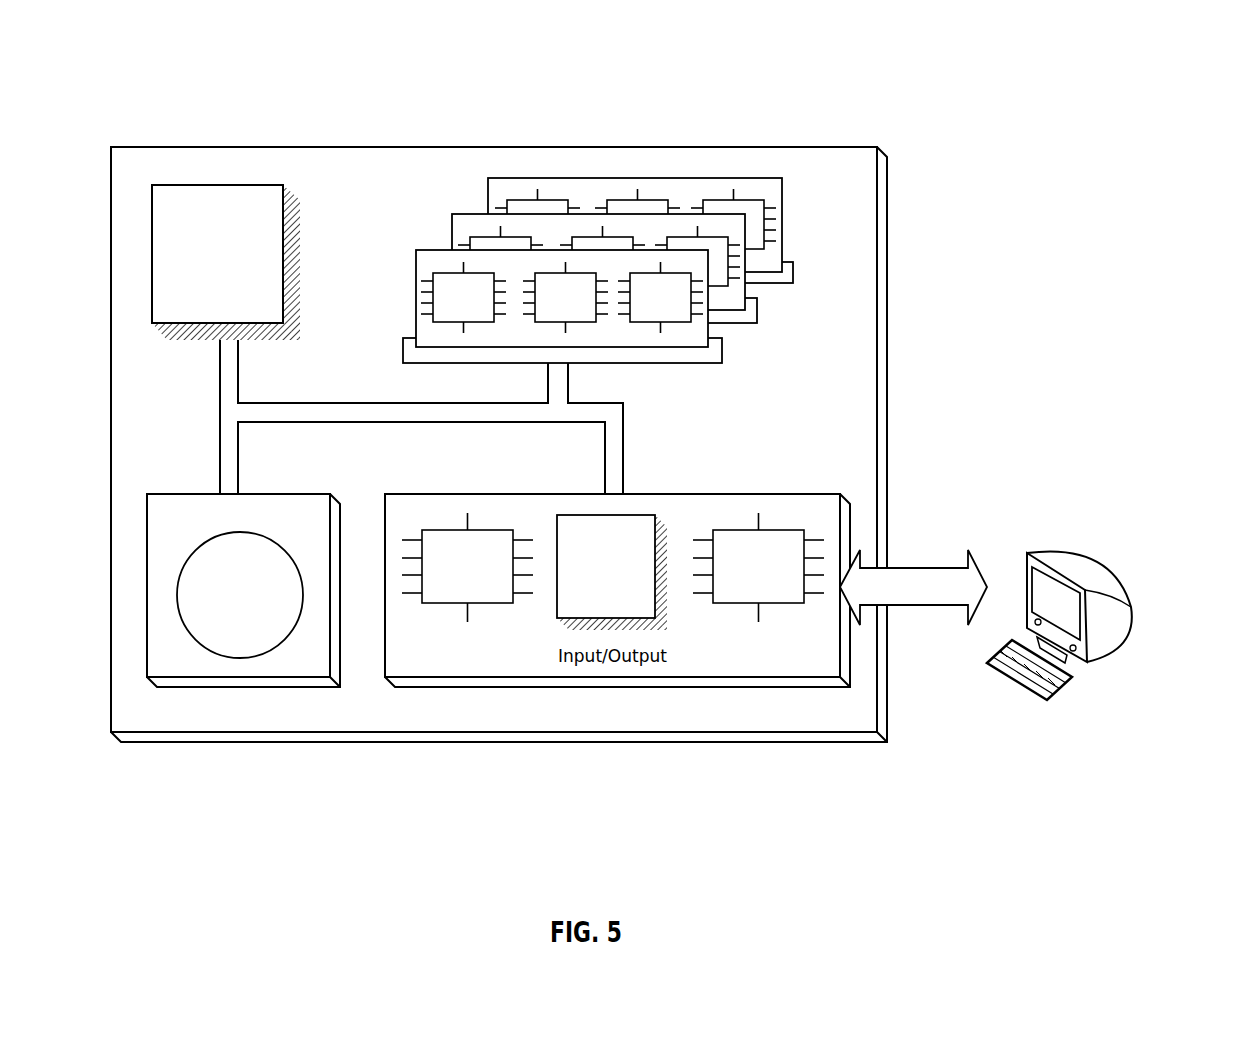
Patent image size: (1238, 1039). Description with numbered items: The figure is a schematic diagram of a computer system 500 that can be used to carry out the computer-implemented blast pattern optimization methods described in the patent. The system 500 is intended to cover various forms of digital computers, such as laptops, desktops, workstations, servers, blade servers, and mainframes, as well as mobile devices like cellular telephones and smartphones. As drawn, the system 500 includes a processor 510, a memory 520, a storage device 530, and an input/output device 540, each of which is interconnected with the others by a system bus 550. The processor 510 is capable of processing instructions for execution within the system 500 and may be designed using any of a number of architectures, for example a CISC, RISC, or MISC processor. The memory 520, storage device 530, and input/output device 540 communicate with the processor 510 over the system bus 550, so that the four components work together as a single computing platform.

The computer system 500 is at (142, 62).
The processor 510 is at (265, 316).
The memory 520 is at (772, 300).
The storage device 530 is at (320, 667).
The input/output device 540 is at (1027, 553).
The system bus 550 is at (380, 413).